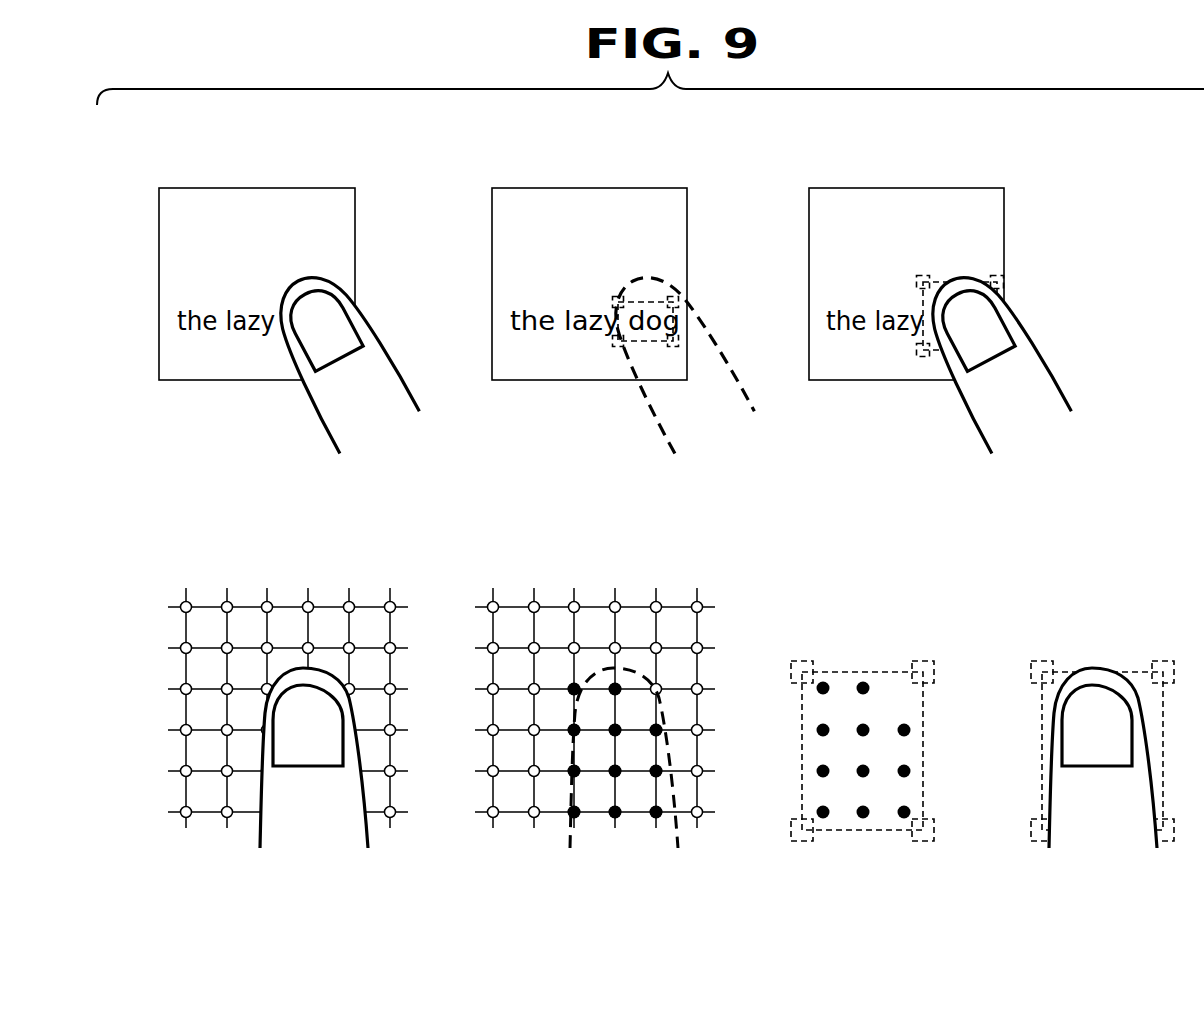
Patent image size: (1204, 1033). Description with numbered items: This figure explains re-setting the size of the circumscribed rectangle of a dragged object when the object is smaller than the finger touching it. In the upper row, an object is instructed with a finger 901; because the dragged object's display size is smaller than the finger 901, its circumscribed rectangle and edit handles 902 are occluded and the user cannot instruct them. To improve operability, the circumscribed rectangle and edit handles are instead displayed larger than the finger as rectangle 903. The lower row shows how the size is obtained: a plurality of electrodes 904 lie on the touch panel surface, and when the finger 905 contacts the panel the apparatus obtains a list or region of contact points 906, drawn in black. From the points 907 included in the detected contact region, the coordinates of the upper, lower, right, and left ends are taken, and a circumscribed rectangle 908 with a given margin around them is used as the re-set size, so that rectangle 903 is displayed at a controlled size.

The finger 901 is at (323, 285).
The circumscribed rectangle and edit handles 902 is at (637, 303).
The rectangle 903 is at (977, 285).
The electrodes 904 is at (312, 602).
The finger 905 is at (317, 667).
The contact points 906 is at (615, 690).
The points included in the contact region 907 is at (823, 683).
The circumscribed rectangle 908 is at (880, 670).